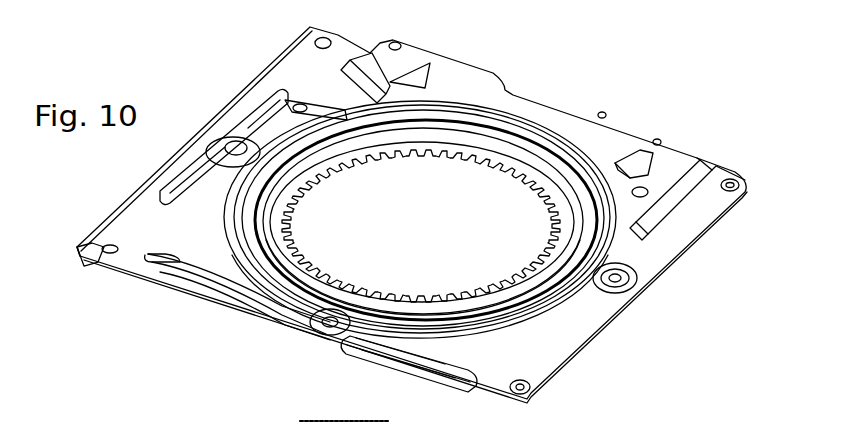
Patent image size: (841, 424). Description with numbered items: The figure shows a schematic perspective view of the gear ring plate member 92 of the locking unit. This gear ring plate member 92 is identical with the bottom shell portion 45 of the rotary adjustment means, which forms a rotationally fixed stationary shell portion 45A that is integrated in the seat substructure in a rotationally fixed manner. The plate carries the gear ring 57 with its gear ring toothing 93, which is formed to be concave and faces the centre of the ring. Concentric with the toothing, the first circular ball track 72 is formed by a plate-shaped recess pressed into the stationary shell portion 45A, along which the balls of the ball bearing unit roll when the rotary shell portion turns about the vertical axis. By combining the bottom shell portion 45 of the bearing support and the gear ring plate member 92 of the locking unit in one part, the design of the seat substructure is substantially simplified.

The bottom shell portion 45 is at (121, 227).
The stationary shell portion 45A is at (653, 61).
The gear ring 57 is at (560, 297).
The first circular ball track 72 is at (492, 150).
The gear ring plate member 92 is at (685, 152).
The gear ring toothing 93 is at (352, 160).